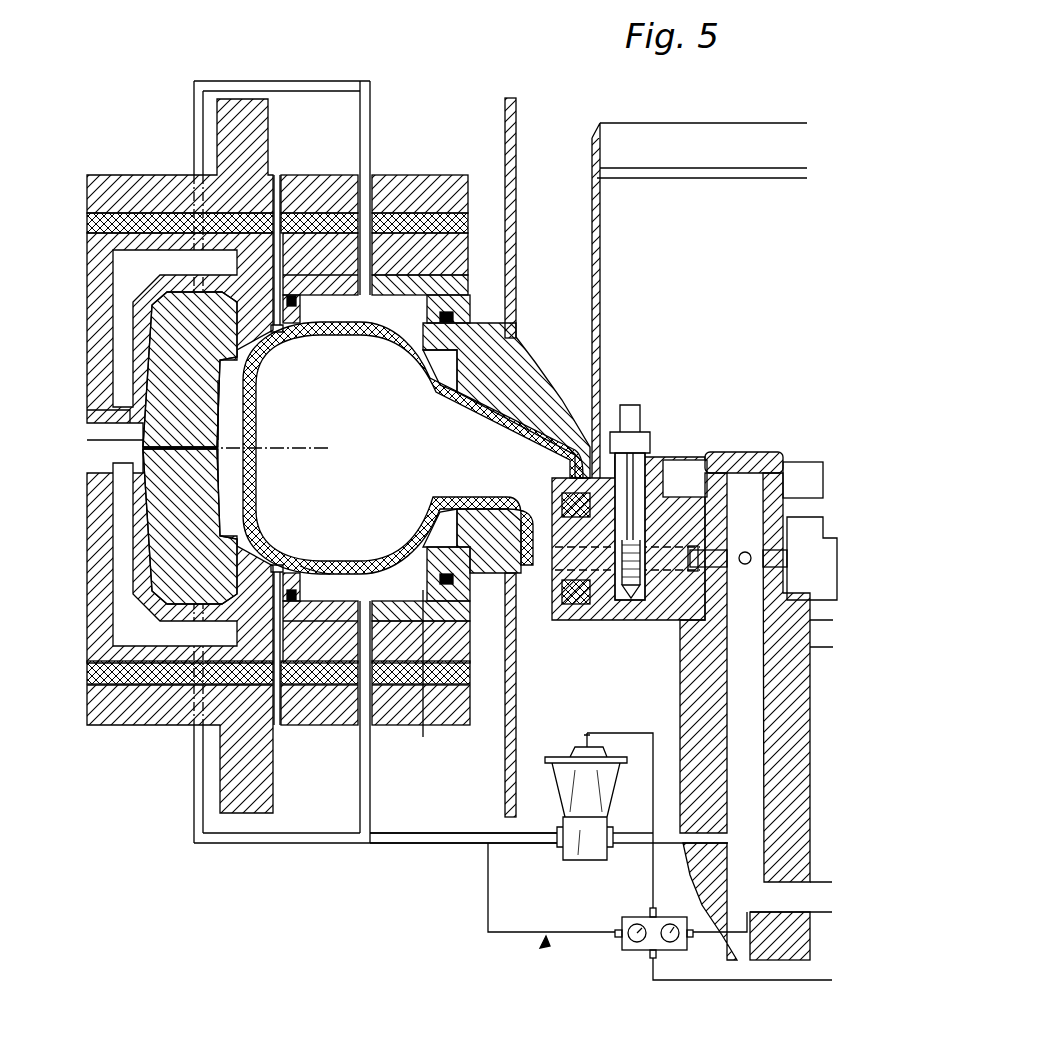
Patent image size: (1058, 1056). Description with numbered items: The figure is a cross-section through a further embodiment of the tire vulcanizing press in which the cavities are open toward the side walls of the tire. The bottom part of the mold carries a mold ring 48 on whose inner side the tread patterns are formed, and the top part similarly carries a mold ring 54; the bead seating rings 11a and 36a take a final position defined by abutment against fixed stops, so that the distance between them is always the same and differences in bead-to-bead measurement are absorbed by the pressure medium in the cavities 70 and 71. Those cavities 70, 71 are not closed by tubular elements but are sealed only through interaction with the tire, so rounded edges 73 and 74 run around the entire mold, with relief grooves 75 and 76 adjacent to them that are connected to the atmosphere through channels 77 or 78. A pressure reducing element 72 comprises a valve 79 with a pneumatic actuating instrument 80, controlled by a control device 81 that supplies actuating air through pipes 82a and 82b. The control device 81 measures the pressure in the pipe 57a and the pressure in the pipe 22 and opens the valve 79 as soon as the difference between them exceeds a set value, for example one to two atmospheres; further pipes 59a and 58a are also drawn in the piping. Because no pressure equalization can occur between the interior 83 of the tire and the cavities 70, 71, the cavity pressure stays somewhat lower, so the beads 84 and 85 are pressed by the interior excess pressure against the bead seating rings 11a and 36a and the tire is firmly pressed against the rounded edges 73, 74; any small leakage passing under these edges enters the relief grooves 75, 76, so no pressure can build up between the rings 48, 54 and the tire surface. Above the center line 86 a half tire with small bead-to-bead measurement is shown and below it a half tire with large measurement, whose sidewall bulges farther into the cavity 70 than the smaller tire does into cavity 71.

The mold ring 54 is at (177, 308).
The channel 77 is at (280, 168).
The cavity 71 is at (408, 310).
The bead seating ring 36a is at (542, 418).
The relief groove 75 is at (278, 333).
The rounded edge 73 is at (310, 347).
The interior of the tire 83 is at (225, 410).
The bead 85 is at (438, 368).
The center line 86 is at (245, 467).
The bead 84 is at (440, 527).
The bead seating ring 11a is at (485, 533).
The relief groove 76 is at (283, 566).
The rounded edge 74 is at (294, 563).
The mold ring 48 is at (192, 582).
The channel 78 is at (281, 703).
The cavity 70 is at (421, 655).
The pipe 22 is at (680, 676).
The pneumatic actuating instrument 80 is at (565, 777).
The pipe 59a is at (247, 843).
The pipe 58a is at (365, 792).
The pipe 57a is at (447, 842).
The valve 79 is at (522, 863).
The pipe 82b is at (657, 820).
The pressure reducing element 72 is at (545, 940).
The control device 81 is at (648, 946).
The pipe 82a is at (712, 982).